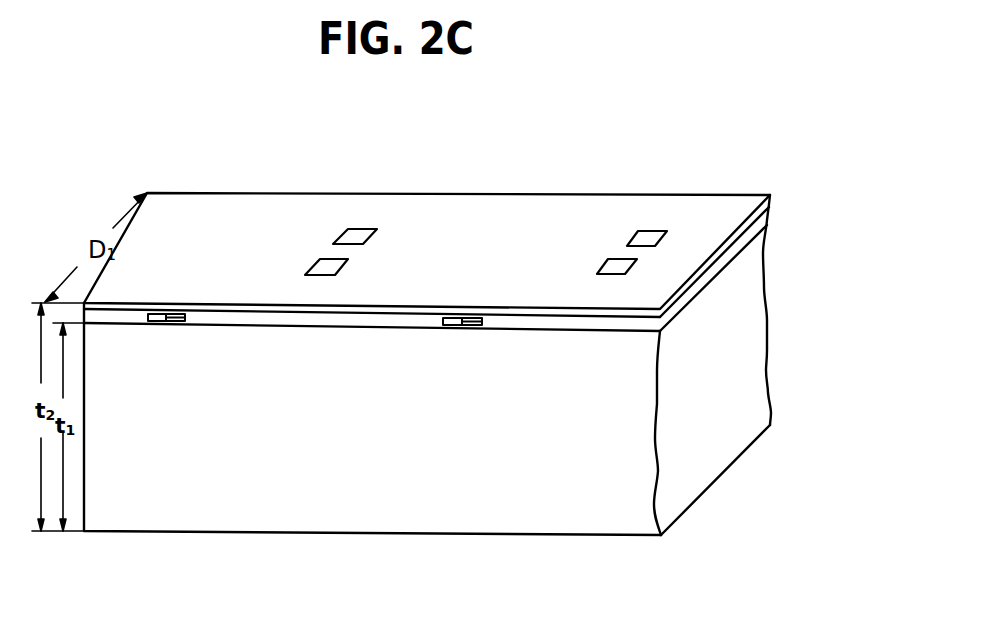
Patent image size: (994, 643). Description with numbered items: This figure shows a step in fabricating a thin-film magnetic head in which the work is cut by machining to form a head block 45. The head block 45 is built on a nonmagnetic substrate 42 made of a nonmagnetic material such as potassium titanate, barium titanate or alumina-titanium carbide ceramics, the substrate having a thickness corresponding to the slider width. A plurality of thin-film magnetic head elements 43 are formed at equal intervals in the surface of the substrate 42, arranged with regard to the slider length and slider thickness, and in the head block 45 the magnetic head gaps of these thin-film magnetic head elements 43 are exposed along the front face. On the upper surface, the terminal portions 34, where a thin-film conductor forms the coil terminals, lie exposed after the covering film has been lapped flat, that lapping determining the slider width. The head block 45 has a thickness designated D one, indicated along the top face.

The terminal portions 34 is at (332, 258).
The nonmagnetic substrate 42 is at (758, 349).
The thin-film magnetic head elements 43 is at (165, 314).
The head block 45 is at (285, 185).